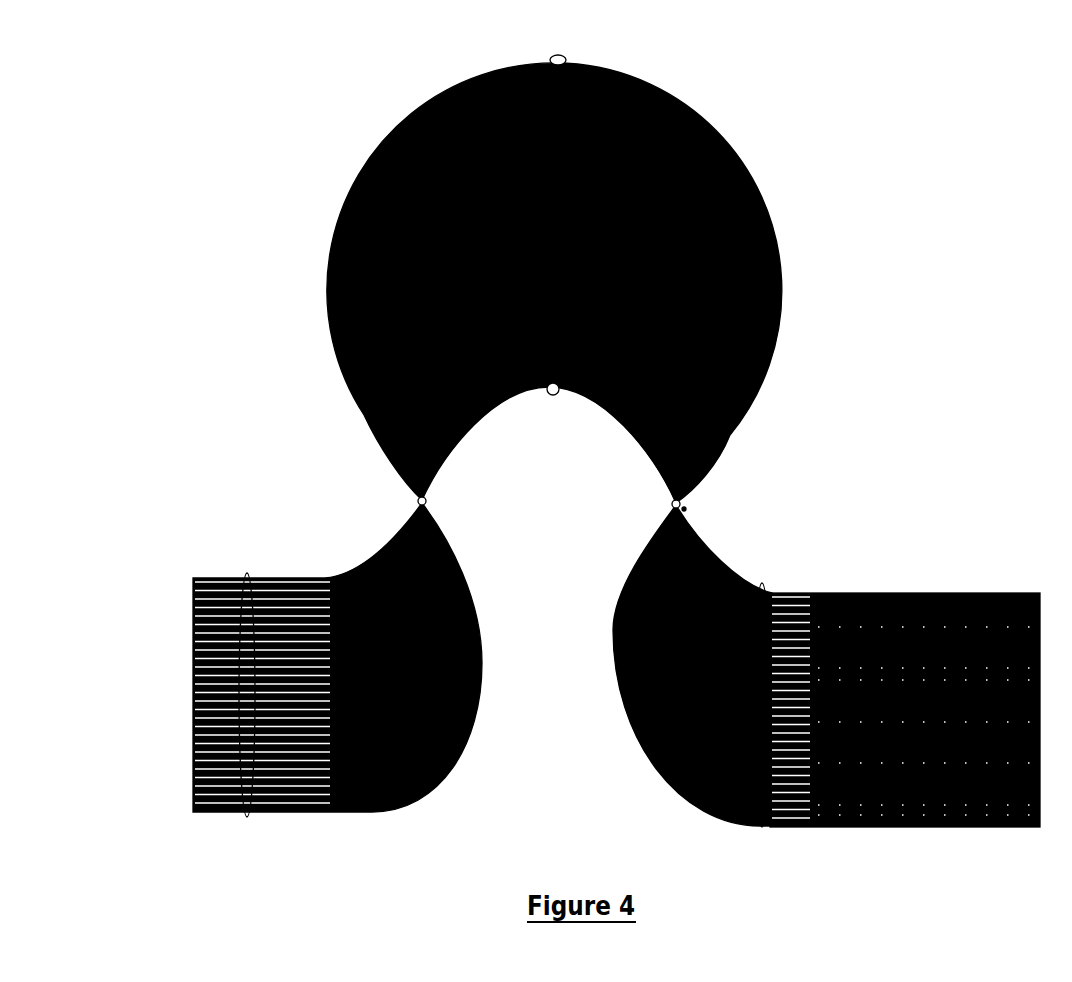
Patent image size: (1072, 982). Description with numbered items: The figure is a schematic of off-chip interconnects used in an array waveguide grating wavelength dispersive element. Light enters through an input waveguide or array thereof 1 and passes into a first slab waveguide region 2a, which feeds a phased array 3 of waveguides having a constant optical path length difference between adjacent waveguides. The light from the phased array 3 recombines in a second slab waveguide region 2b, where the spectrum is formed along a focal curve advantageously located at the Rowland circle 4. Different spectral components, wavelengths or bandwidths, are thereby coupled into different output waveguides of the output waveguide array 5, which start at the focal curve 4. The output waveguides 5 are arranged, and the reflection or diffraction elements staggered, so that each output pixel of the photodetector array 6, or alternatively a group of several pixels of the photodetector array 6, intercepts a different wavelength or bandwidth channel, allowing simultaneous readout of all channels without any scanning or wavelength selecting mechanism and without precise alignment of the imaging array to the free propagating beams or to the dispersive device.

The input waveguide 1 is at (192, 686).
The slab waveguide region 2a is at (418, 500).
The slab waveguide region 2b is at (667, 503).
The phased array 3 is at (477, 75).
The Rowland circle 4 is at (680, 507).
The output waveguide array 5 is at (678, 778).
The photodetector array 6 is at (950, 593).